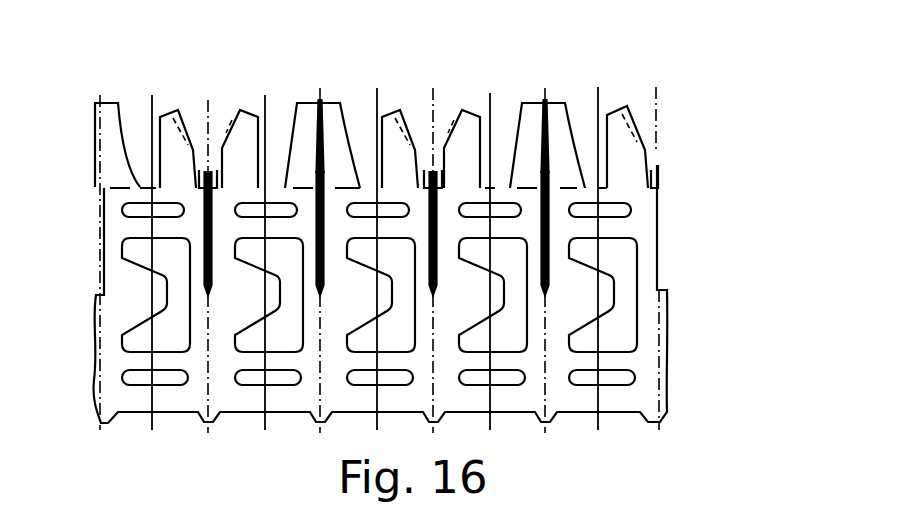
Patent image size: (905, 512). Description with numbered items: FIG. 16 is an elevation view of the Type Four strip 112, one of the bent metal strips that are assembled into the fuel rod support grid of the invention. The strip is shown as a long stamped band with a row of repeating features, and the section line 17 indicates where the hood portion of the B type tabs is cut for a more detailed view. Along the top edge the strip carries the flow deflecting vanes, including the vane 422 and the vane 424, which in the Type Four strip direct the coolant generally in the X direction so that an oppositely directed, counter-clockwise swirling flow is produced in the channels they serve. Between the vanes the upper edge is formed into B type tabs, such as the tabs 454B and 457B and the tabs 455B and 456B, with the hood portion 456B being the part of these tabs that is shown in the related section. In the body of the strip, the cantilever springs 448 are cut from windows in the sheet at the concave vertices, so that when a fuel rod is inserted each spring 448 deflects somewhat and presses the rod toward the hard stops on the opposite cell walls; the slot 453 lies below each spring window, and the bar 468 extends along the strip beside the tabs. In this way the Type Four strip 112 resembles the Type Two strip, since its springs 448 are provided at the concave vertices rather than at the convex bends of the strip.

The carrier strip / terminal body 112 is at (683, 260).
The section line for FIG. 17 is at (277, 58).
The contact beam tab 422 is at (295, 101).
The vane 424 is at (344, 128).
The left retention barb 454B is at (187, 142).
The B type tab 457B is at (237, 137).
The left retention barb 455B is at (405, 120).
The hood portion 456B is at (458, 118).
The conductor pin 468 is at (546, 233).
The spring 448 is at (593, 297).
The lower slot 453 is at (617, 378).